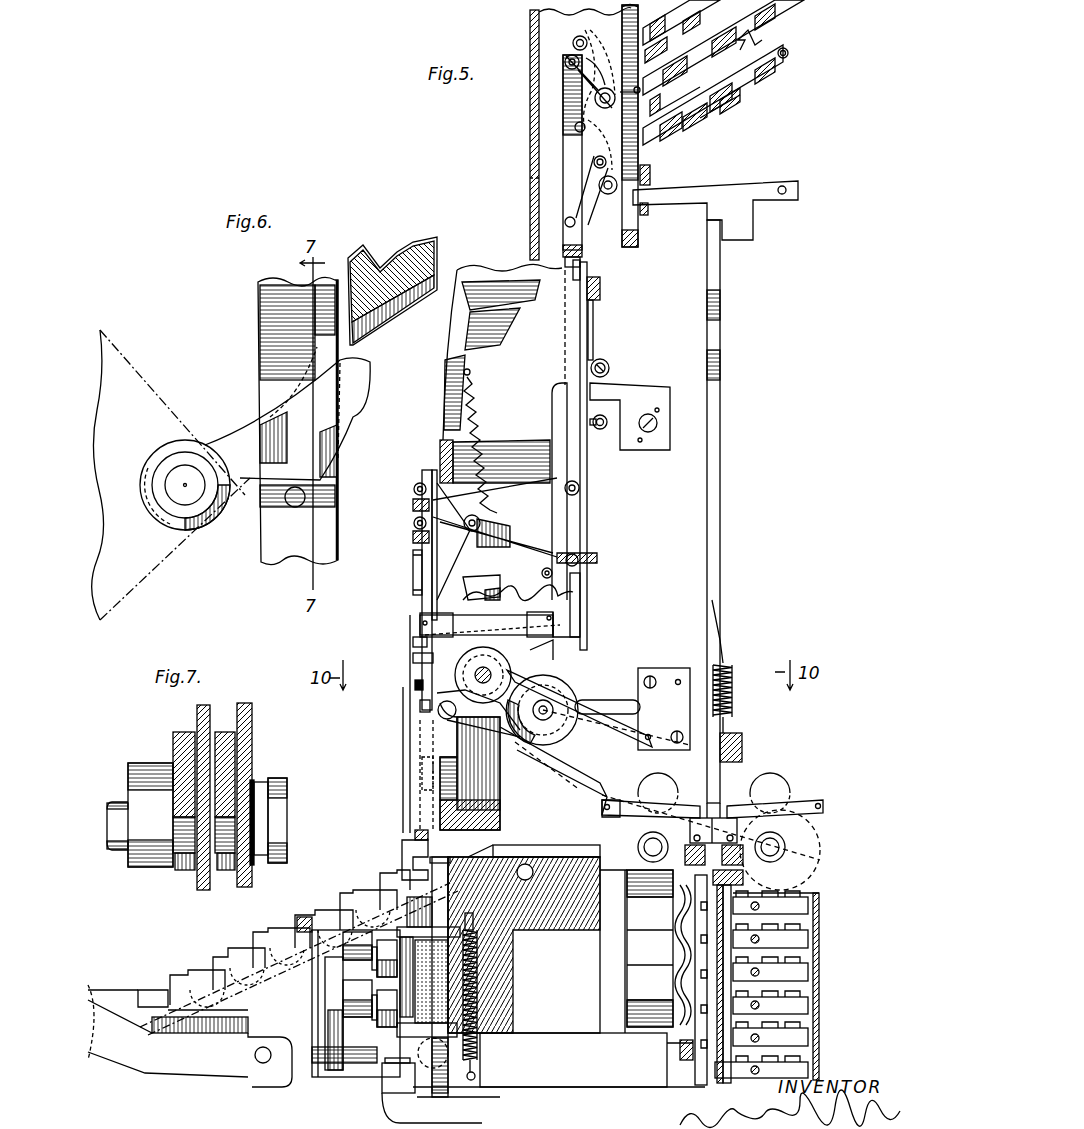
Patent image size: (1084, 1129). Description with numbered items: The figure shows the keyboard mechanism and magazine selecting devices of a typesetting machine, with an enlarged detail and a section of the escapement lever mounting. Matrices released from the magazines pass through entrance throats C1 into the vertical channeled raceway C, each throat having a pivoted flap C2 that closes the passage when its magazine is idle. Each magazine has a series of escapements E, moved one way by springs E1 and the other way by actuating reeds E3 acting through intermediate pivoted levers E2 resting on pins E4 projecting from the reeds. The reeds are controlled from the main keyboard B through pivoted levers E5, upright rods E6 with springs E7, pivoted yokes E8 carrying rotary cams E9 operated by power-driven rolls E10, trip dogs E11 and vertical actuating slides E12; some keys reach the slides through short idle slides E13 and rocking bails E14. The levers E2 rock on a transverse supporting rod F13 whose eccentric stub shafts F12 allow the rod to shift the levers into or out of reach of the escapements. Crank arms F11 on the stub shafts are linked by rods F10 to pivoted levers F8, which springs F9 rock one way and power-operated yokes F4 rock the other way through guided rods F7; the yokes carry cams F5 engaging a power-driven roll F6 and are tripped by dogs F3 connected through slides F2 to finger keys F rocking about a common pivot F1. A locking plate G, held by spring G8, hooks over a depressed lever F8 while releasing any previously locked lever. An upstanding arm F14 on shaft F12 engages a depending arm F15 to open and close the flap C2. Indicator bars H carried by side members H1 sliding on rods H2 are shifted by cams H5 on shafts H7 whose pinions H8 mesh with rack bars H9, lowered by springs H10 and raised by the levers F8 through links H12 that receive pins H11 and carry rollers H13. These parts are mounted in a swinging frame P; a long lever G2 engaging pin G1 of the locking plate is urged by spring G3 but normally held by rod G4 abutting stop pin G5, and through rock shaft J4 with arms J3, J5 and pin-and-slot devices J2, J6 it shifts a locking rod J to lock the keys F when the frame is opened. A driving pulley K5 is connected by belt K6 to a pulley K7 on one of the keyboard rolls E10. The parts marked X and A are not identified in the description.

In FIG. 5, the vertical channeled raceway C is at (535, 227).
In FIG. 5, the entrance throats C1 is at (602, 89).
In FIG. 5, the pivoted flap C2 is at (530, 178).
In FIG. 5, the crank arms F11 is at (563, 93).
In FIG. 6, the crank arms F11 is at (160, 598).
In FIG. 5, the eccentric stub shafts F12 is at (590, 212).
In FIG. 6, the eccentric stub shafts F12 is at (172, 490).
In FIG. 7, the eccentric stub shafts F12 is at (120, 817).
In FIG. 6, the transverse supporting rod F13 is at (202, 448).
In FIG. 7, the transverse supporting rod F13 is at (258, 782).
In FIG. 5, the upstanding arm F14 is at (562, 200).
In FIG. 5, the depending arm F15 is at (572, 44).
In FIG. 5, the escapements E is at (727, 118).
In FIG. 6, the escapements E is at (392, 297).
In FIG. 5, the springs E1 is at (757, 78).
In FIG. 5, the intermediate pivoted levers E2 is at (651, 175).
In FIG. 6, the intermediate pivoted levers E2 is at (358, 403).
In FIG. 7, the intermediate pivoted levers E2 is at (174, 737).
In FIG. 5, the actuating reeds E3 is at (723, 58).
In FIG. 6, the actuating reeds E3 is at (265, 345).
In FIG. 7, the actuating reeds E3 is at (200, 720).
In FIG. 6, the pins E4 is at (300, 493).
In FIG. 7, the pins E4 is at (215, 865).
In FIG. 5, the pivoted levers E5 is at (730, 193).
In FIG. 5, the upright rods E6 is at (745, 322).
In FIG. 5, the springs E7 is at (730, 672).
In FIG. 5, the pivoted yokes E8 is at (616, 803).
In FIG. 5, the rotary cams E9 is at (667, 793).
In FIG. 5, the power-driven rolls E10 is at (645, 850).
In FIG. 5, the trip dogs E11 is at (722, 820).
In FIG. 5, the vertical actuating slides E12 is at (688, 1095).
In FIG. 5, the short idle slides E13 is at (693, 928).
In FIG. 5, the rocking bails E14 is at (802, 907).
In FIG. 5, the spring X is at (750, 35).
In FIG. 5, the pivot A is at (788, 50).
In FIG. 5, the swinging frame P is at (440, 444).
In FIG. 5, the springs F9 is at (480, 455).
In FIG. 5, the long rods or links F10 is at (552, 416).
In FIG. 5, the locking plate G is at (562, 553).
In FIG. 5, the pin G1 is at (590, 559).
In FIG. 5, the long lever G2 is at (579, 488).
In FIG. 5, the spring G3 is at (602, 429).
In FIG. 5, the horizontal rod G4 is at (630, 416).
In FIG. 5, the stop pin G5 is at (603, 362).
In FIG. 5, the spring G8 is at (546, 575).
In FIG. 5, the pins or rollers H13 is at (413, 502).
In FIG. 5, the pivoted levers F8 is at (462, 535).
In FIG. 5, the vertically guided rods F7 is at (413, 580).
In FIG. 5, the rotary cams F5 is at (500, 594).
In FIG. 5, the power-operated yokes F4 is at (413, 641).
In FIG. 5, the trip dogs F3 is at (413, 657).
In FIG. 5, the vertical slides F2 is at (470, 777).
In FIG. 5, the common pivot F1 is at (472, 797).
In FIG. 5, the power-driven roll F6 is at (548, 640).
In FIG. 5, the finger keys F is at (410, 782).
In FIG. 5, the locking rod J is at (450, 723).
In FIG. 5, the pin and slot device J2 is at (440, 712).
In FIG. 5, the arm J3 is at (420, 703).
In FIG. 5, the rock shaft J4 is at (518, 621).
In FIG. 5, the arm J5 is at (580, 600).
In FIG. 5, the pin and slot device J6 is at (581, 578).
In FIG. 5, the driving pulley K5 is at (558, 690).
In FIG. 5, the belt K6 is at (600, 700).
In FIG. 5, the pulley K7 is at (812, 840).
In FIG. 5, the main keyboard B is at (636, 915).
In FIG. 5, the indicator bars H is at (258, 937).
In FIG. 5, the side members H1 is at (350, 955).
In FIG. 5, the fixed supporting rods H2 is at (255, 1056).
In FIG. 5, the segmental peripheral cams H5 is at (350, 994).
In FIG. 5, the short fore-and-aft shafts H7 is at (372, 946).
In FIG. 5, the pinions H8 is at (430, 1080).
In FIG. 5, the vertical rack bars H9 is at (427, 960).
In FIG. 5, the springs H10 is at (479, 1000).
In FIG. 5, the pins H11 is at (428, 865).
In FIG. 5, the vertical rods or links H12 is at (402, 840).